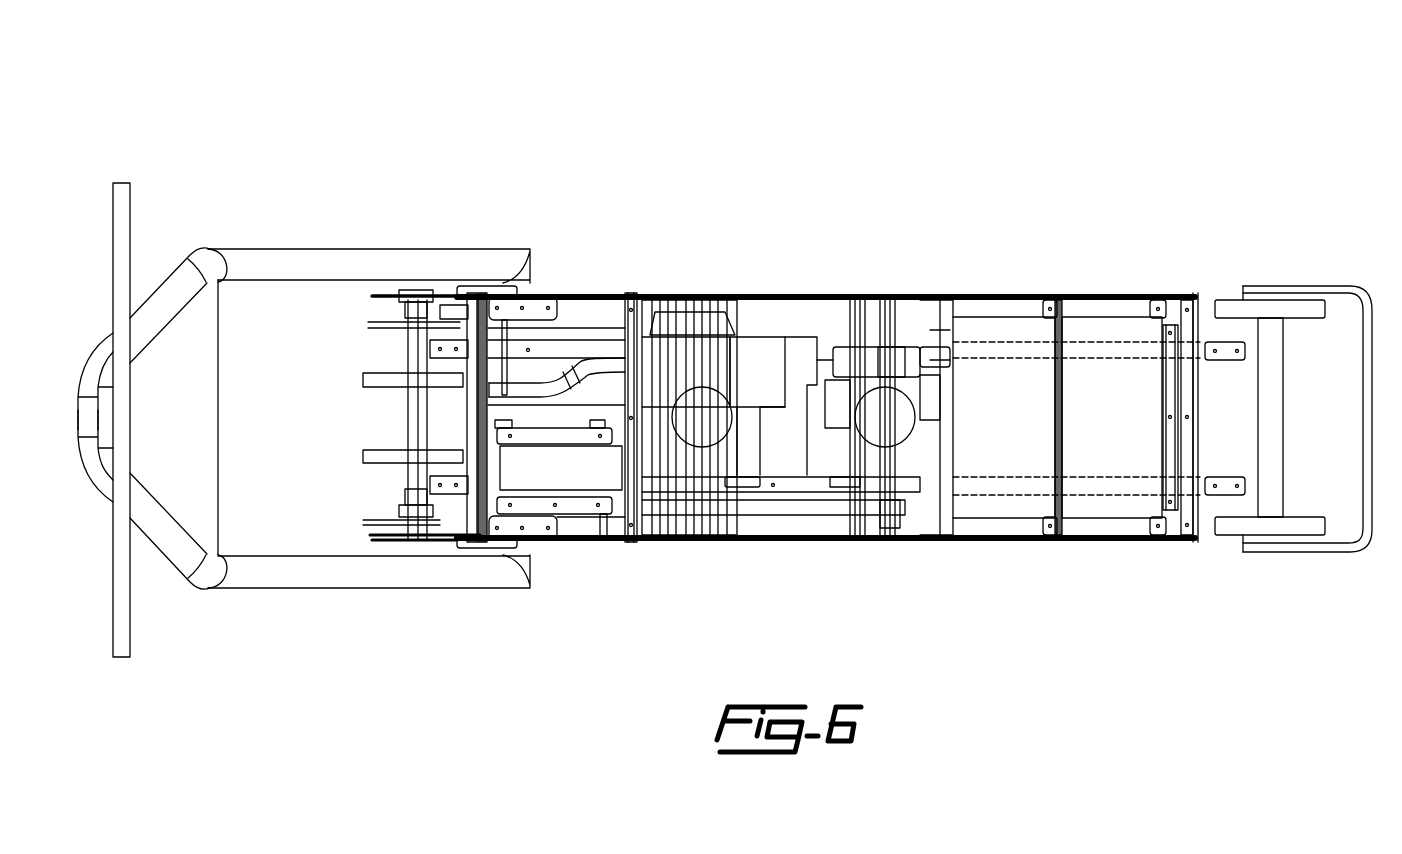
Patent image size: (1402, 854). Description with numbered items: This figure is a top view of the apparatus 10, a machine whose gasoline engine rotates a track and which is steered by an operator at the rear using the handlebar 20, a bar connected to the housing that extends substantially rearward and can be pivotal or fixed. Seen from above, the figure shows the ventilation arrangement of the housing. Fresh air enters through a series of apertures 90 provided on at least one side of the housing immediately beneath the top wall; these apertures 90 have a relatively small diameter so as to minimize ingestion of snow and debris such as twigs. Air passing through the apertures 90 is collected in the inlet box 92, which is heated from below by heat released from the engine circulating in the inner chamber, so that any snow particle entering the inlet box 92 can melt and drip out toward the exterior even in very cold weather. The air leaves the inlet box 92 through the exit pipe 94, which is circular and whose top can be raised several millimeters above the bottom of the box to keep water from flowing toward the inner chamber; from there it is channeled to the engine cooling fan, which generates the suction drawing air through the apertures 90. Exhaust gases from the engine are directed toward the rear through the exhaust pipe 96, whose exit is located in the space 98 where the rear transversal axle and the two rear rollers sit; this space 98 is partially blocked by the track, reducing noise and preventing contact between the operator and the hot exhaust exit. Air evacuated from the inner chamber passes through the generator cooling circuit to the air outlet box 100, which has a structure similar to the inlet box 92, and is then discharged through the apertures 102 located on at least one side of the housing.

The apparatus 10 is at (1218, 163).
The handlebar 20 is at (327, 263).
The apertures 90 is at (677, 296).
The inlet box 92 is at (707, 333).
The exit pipe 94 is at (700, 430).
The exhaust pipe 96 is at (588, 365).
The space 98 is at (437, 417).
The air outlet box 100 is at (925, 296).
The apertures 102 is at (880, 296).